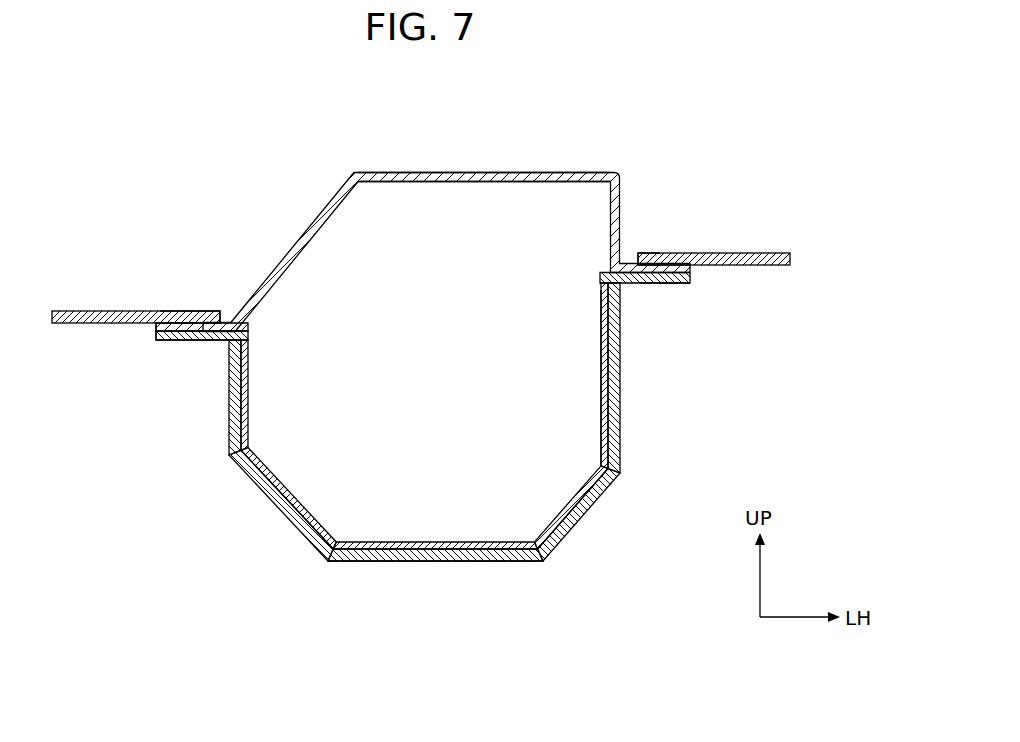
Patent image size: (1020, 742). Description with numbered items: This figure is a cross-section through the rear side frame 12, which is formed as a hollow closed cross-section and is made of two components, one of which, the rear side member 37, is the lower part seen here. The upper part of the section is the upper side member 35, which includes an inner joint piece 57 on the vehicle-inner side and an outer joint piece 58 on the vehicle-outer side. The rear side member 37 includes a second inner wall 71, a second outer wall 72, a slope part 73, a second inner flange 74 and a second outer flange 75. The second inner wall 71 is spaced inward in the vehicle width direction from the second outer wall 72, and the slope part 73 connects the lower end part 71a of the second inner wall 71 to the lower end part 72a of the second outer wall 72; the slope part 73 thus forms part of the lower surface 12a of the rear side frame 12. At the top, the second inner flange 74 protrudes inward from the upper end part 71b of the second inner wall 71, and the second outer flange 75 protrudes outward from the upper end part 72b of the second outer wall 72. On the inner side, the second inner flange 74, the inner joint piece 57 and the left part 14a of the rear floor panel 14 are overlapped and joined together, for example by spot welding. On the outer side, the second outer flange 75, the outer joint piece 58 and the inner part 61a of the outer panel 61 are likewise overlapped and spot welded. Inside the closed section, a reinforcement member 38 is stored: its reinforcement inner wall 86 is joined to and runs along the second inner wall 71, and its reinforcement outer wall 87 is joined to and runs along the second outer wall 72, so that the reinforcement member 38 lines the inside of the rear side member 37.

The rear side frame 12 is at (328, 175).
The upper side member 35 is at (437, 166).
The rear floor panel 14 is at (62, 310).
The left part of the rear floor panel 14a is at (183, 312).
The inner joint piece 57 is at (205, 323).
The second inner flange 74 is at (195, 340).
The upper end part of the second inner wall 71b is at (240, 330).
The second inner wall 71 is at (228, 428).
The reinforcement inner wall 86 is at (250, 404).
The rear side member 37 is at (402, 450).
The lower end part of the second inner wall 71a is at (318, 556).
The lower surface of the rear side frame 12a is at (378, 562).
The slope part 73 is at (450, 562).
The reinforcement outer wall 87 is at (432, 542).
The lower end part of the second outer wall 72a is at (556, 551).
The second outer wall 72 is at (622, 399).
The reinforcement member 38 is at (594, 336).
The upper end part of the second outer wall 72b is at (617, 274).
The second outer flange 75 is at (670, 284).
The outer joint piece 58 is at (680, 264).
The inner part of the outer panel 61a is at (655, 253).
The outer panel 61 is at (770, 253).